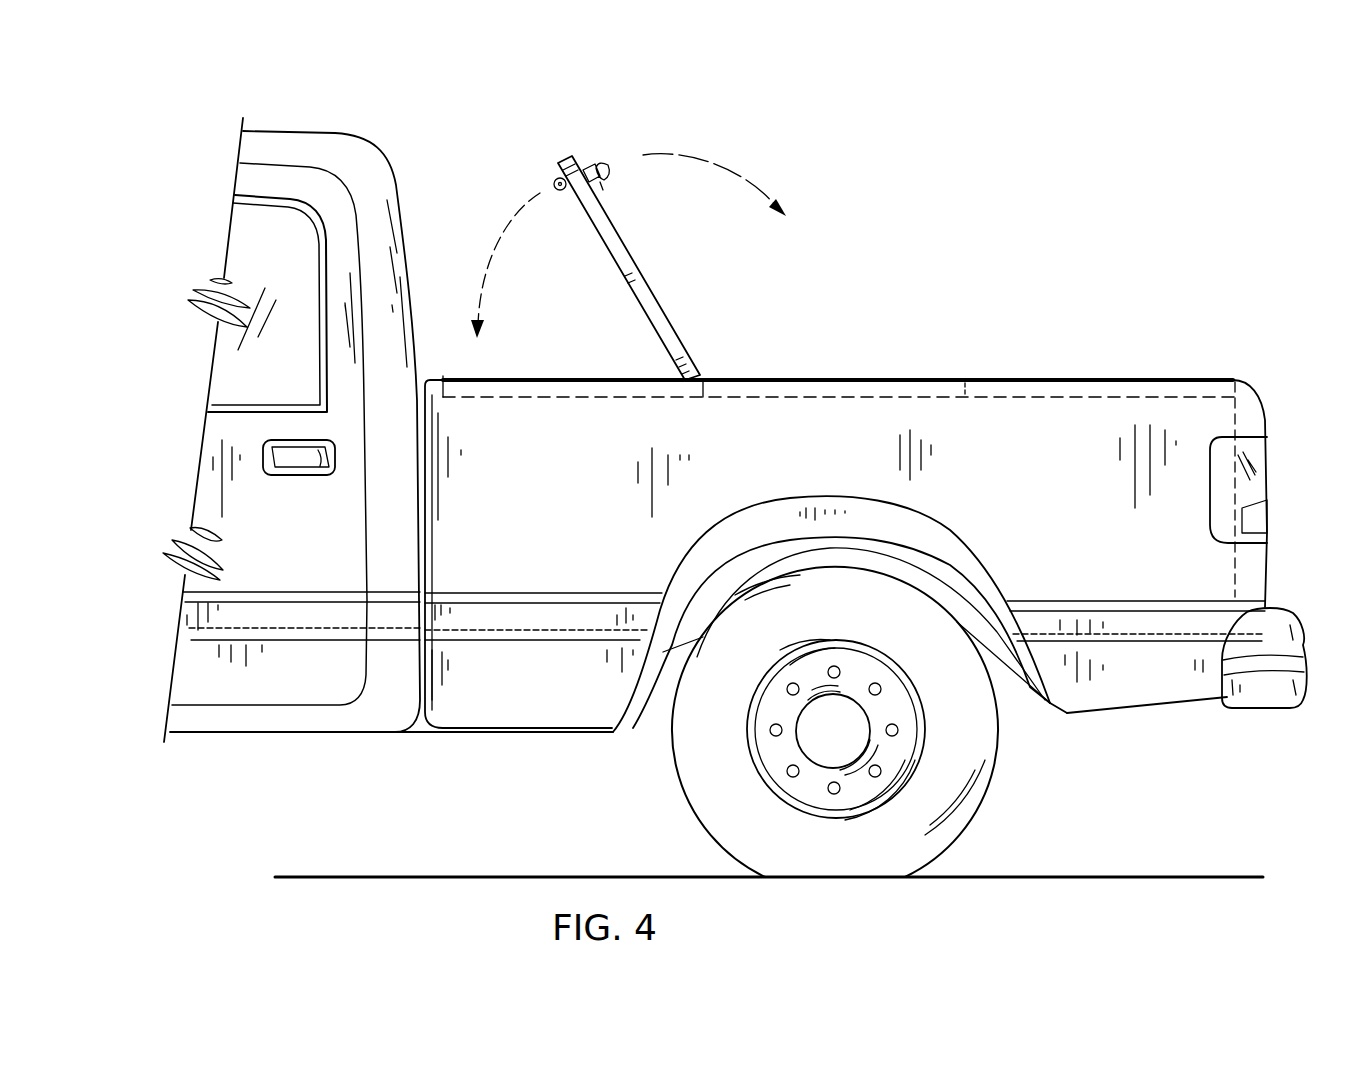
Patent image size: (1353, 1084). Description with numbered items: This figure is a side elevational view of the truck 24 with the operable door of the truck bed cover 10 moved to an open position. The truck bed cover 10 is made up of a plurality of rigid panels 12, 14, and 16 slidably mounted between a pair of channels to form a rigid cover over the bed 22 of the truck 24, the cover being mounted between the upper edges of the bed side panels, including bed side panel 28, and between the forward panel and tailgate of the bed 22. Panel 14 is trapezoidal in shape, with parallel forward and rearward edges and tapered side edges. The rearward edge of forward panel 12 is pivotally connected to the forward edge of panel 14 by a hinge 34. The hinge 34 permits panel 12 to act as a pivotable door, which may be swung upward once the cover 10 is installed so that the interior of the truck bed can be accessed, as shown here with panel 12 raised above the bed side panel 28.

The truck bed cover 10 is at (940, 232).
The forward panel 12 is at (620, 248).
The panel 14 is at (878, 390).
The panel 16 is at (1075, 388).
The bed 22 is at (994, 360).
The truck 24 is at (372, 165).
The bed side panel 28 is at (1028, 473).
The hinge 34 is at (703, 377).